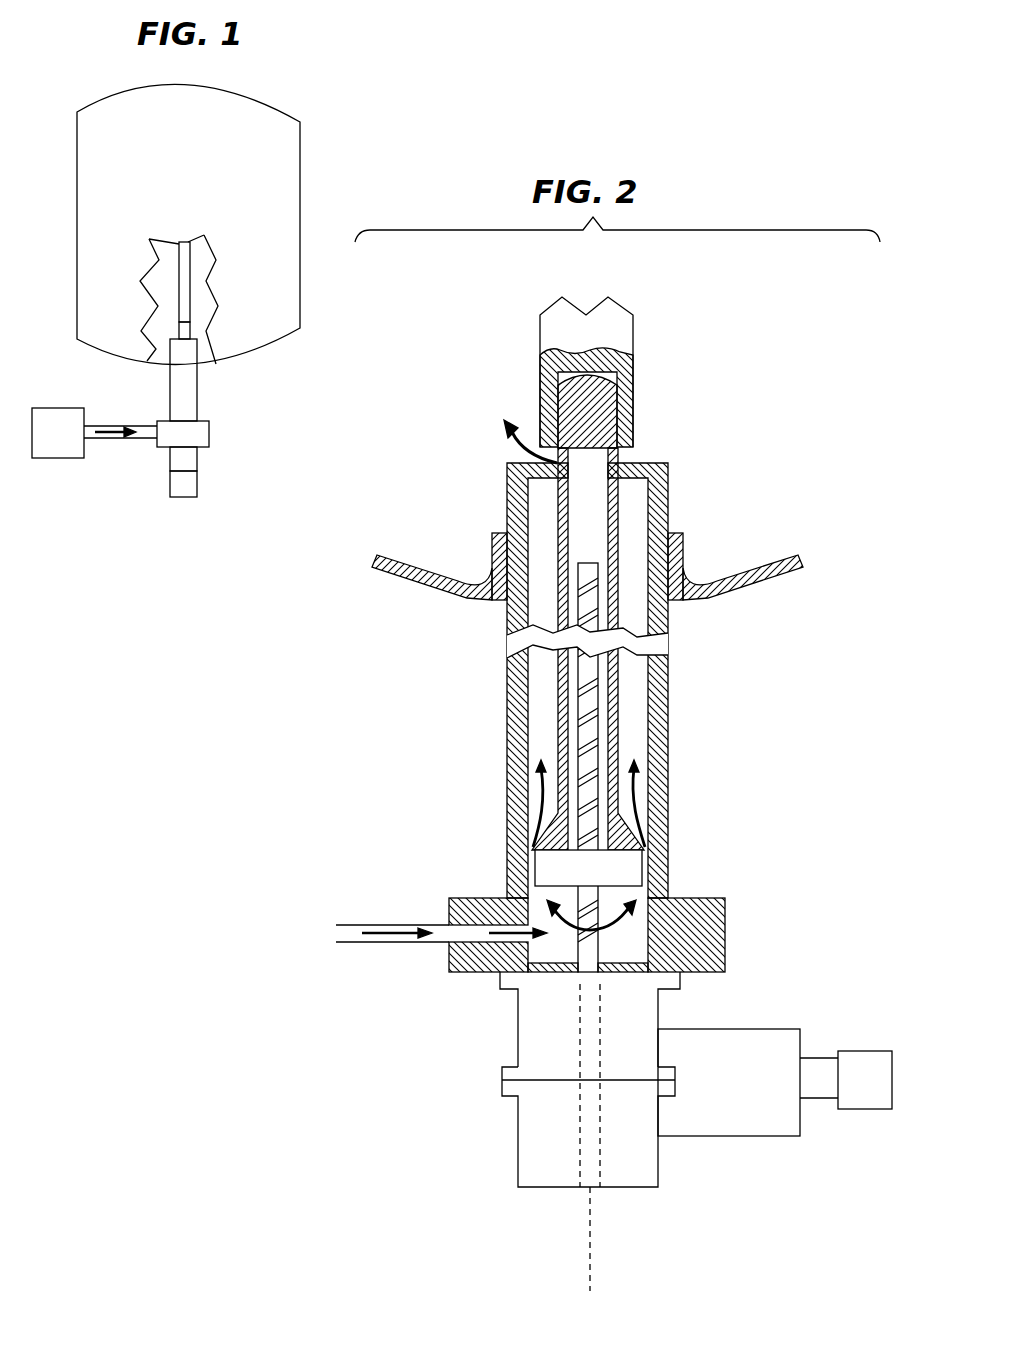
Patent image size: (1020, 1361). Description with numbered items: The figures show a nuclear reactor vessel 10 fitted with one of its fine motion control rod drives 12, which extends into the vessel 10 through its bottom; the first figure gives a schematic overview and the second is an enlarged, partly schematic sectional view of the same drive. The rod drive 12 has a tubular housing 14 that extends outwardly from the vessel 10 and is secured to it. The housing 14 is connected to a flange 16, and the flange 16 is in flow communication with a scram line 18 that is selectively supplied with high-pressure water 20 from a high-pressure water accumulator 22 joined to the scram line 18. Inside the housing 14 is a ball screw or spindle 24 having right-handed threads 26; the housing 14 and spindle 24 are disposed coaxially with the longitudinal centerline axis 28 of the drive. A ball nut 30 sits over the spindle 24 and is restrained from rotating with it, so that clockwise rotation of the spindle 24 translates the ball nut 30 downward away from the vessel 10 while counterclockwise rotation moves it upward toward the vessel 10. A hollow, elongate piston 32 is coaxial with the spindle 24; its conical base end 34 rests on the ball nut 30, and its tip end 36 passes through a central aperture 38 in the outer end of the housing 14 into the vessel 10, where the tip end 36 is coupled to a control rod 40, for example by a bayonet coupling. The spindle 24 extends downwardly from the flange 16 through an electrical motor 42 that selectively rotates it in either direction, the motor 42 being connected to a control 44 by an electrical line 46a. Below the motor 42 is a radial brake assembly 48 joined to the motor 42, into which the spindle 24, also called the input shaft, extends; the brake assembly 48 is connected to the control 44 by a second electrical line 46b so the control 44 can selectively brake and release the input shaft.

In FIG. 1, the nuclear reactor vessel 10 is at (300, 190).
In FIG. 2, the nuclear reactor vessel 10 is at (400, 578).
In FIG. 1, the fine motion control rod drive 12 is at (197, 405).
In FIG. 2, the fine motion control rod drive 12 is at (680, 690).
In FIG. 2, the tubular housing 14 is at (507, 737).
In FIG. 1, the flange 16 is at (209, 437).
In FIG. 2, the flange 16 is at (713, 898).
In FIG. 1, the scram line 18 is at (136, 440).
In FIG. 2, the scram line 18 is at (393, 924).
In FIG. 2, the high-pressure water 20 is at (507, 443).
In FIG. 1, the high-pressure water accumulator 22 is at (58, 433).
In FIG. 2, the ball screw or spindle 24 is at (589, 975).
In FIG. 2, the right-handed threads 26 is at (530, 878).
In FIG. 2, the longitudinal centerline axis 28 is at (590, 1218).
In FIG. 2, the ball nut 30 is at (643, 870).
In FIG. 2, the piston 32 is at (618, 740).
In FIG. 2, the conical base end 34 is at (623, 833).
In FIG. 1, the tip end 36 is at (193, 336).
In FIG. 2, the tip end 36 is at (605, 408).
In FIG. 2, the central aperture 38 is at (620, 463).
In FIG. 1, the control rod 40 is at (190, 274).
In FIG. 2, the control rod 40 is at (634, 337).
In FIG. 1, the electrical motor 42 is at (197, 460).
In FIG. 2, the electrical motor 42 is at (518, 1036).
In FIG. 2, the control 44 is at (865, 1080).
In FIG. 2, the electrical line 46a is at (749, 1029).
In FIG. 2, the electrical line 46b is at (756, 1136).
In FIG. 1, the radial brake assembly 48 is at (197, 487).
In FIG. 2, the radial brake assembly 48 is at (518, 1153).